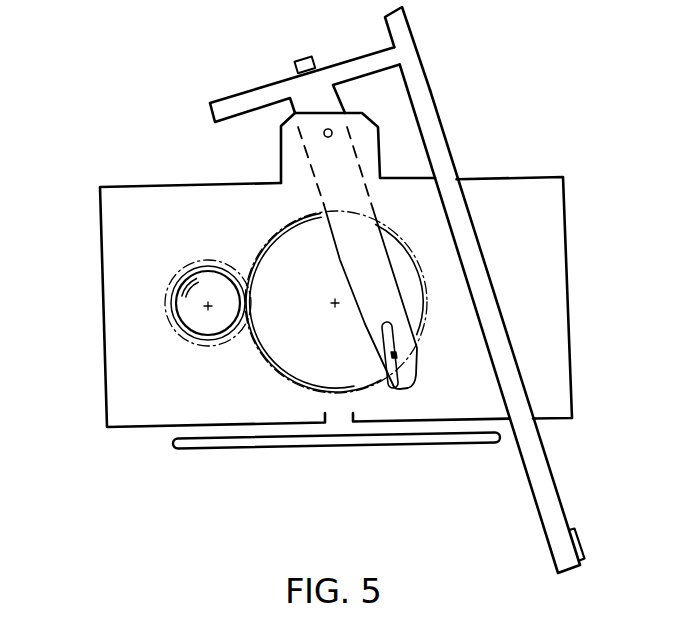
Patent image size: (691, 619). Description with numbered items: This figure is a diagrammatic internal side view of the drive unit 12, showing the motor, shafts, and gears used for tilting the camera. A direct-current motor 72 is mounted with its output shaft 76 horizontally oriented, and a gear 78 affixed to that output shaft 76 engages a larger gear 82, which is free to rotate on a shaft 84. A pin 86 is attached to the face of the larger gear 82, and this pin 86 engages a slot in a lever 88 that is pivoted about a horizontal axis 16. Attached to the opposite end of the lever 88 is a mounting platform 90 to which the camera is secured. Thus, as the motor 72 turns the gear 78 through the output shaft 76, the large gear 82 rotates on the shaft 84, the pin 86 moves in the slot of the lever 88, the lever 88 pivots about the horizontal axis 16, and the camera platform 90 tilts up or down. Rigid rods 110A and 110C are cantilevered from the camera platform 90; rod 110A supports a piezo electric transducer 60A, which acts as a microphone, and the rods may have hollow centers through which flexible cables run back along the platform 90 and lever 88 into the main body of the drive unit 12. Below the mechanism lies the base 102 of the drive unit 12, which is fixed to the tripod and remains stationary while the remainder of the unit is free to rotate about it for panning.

The drive unit 12 is at (97, 282).
The horizontal axis 16 is at (323, 134).
The piezo electric transducer 60A is at (587, 561).
The direct-current motor 72 is at (230, 259).
The output shaft 76 is at (205, 309).
The gear 78 is at (173, 289).
The larger gear 82 is at (272, 371).
The shaft 84 is at (333, 306).
The pin 86 is at (400, 357).
The lever 88 is at (376, 364).
The mounting platform 90 is at (242, 77).
The base 102 is at (195, 448).
The rigid rod 110A is at (506, 290).
The rigid rod 110C is at (409, 28).